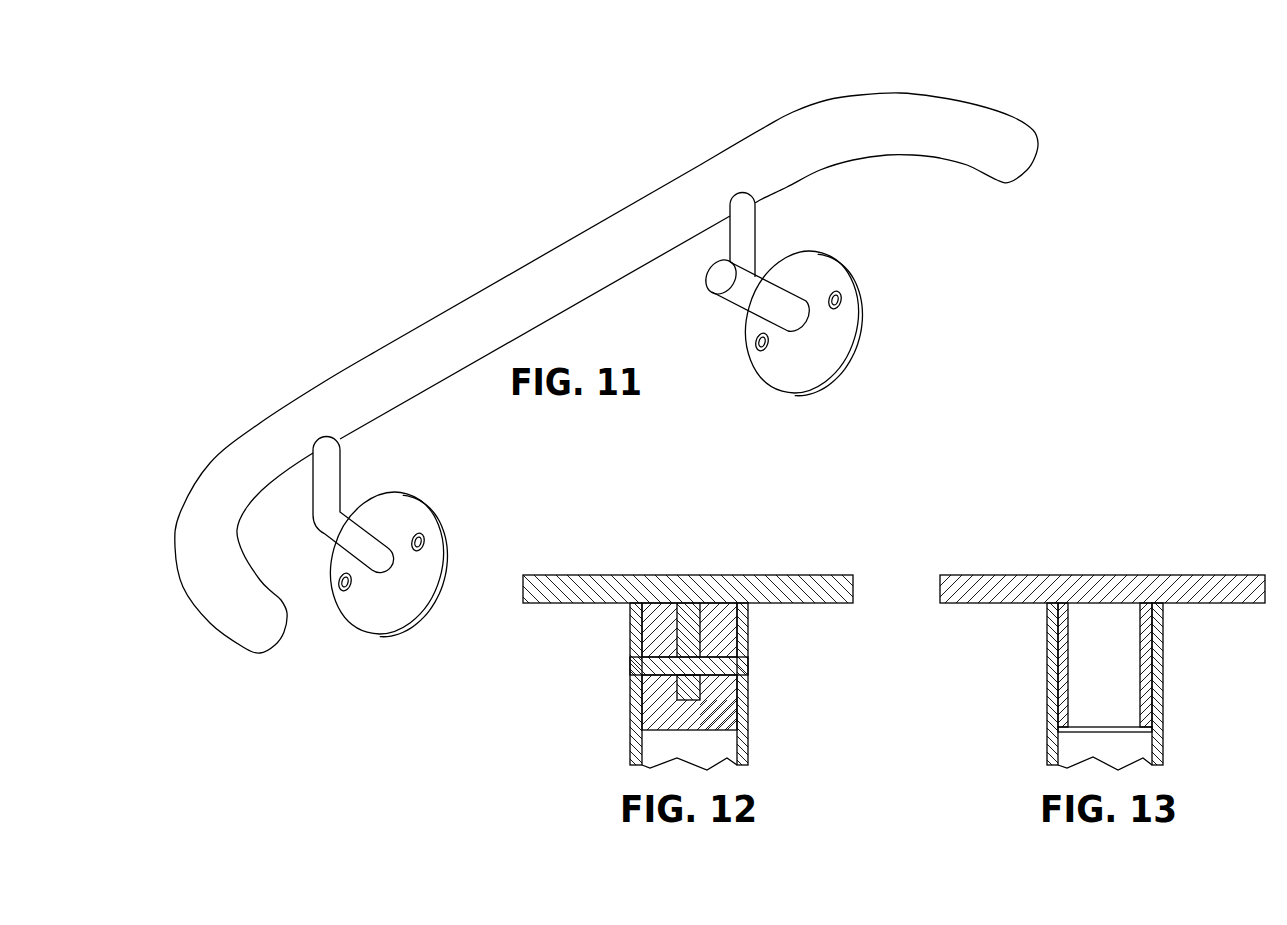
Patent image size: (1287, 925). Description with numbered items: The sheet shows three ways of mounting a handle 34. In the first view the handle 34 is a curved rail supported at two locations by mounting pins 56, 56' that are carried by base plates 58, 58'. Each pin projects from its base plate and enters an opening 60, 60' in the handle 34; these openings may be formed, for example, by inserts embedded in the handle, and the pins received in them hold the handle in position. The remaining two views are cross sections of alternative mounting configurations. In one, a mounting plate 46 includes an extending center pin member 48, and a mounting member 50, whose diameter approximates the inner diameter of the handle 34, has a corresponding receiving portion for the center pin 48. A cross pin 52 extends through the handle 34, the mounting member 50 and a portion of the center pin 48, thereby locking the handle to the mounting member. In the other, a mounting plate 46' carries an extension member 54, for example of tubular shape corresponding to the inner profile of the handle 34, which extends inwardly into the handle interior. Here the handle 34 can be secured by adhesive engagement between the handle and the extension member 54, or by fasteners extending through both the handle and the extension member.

In FIG. 11, the handle 34 is at (940, 130).
In FIG. 12, the handle 34 is at (747, 747).
In FIG. 13, the handle 34 is at (1160, 720).
In FIG. 12, the mounting plate 46 is at (688, 567).
In FIG. 13, the mounting plate 46' is at (1102, 569).
In FIG. 12, the center pin member 48 is at (680, 633).
In FIG. 12, the mounting member 50 is at (727, 707).
In FIG. 12, the cross pin 52 is at (748, 667).
In FIG. 13, the extension member 54 is at (1145, 670).
In FIG. 11, the mounting pin 56 is at (759, 271).
In FIG. 11, the mounting pin 56' is at (362, 511).
In FIG. 11, the base plate 58 is at (810, 322).
In FIG. 11, the base plate 58' is at (405, 563).
In FIG. 11, the opening 60 is at (713, 163).
In FIG. 11, the opening 60' is at (302, 391).